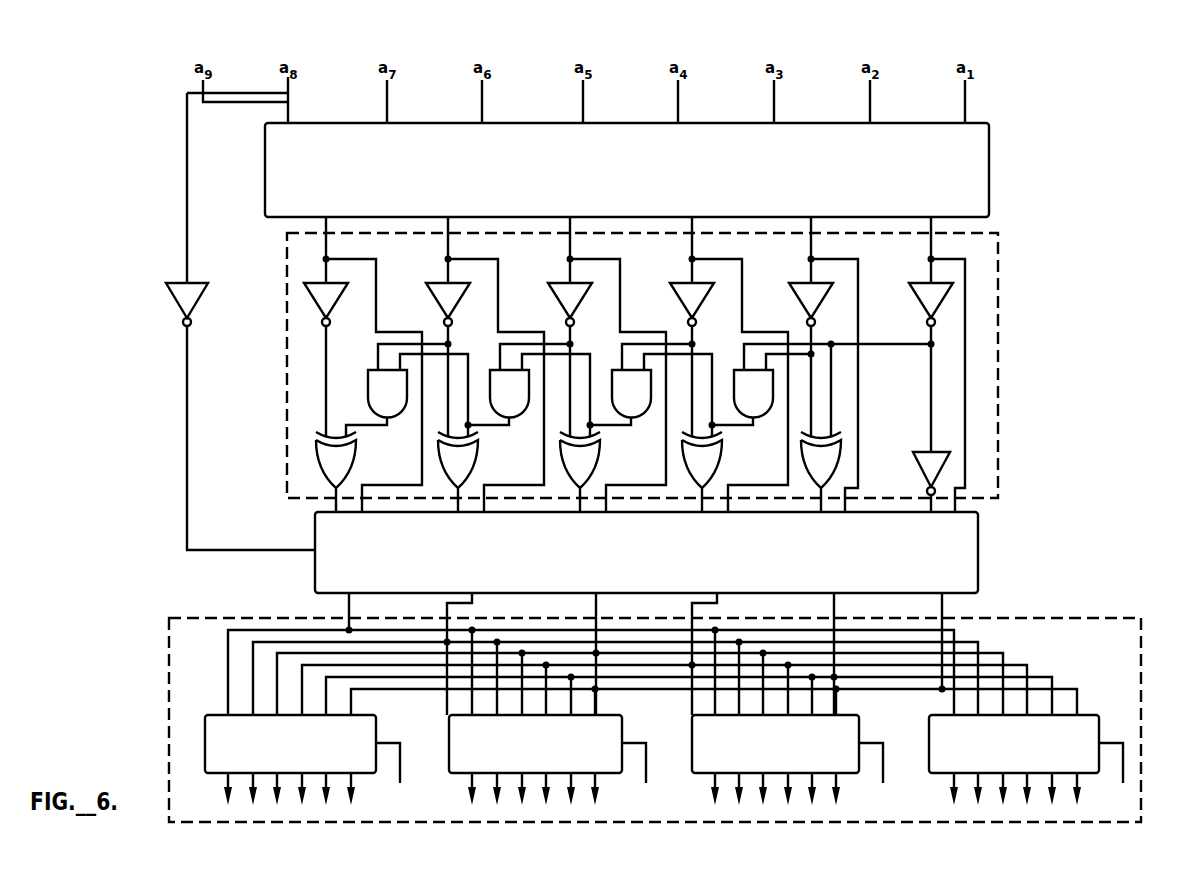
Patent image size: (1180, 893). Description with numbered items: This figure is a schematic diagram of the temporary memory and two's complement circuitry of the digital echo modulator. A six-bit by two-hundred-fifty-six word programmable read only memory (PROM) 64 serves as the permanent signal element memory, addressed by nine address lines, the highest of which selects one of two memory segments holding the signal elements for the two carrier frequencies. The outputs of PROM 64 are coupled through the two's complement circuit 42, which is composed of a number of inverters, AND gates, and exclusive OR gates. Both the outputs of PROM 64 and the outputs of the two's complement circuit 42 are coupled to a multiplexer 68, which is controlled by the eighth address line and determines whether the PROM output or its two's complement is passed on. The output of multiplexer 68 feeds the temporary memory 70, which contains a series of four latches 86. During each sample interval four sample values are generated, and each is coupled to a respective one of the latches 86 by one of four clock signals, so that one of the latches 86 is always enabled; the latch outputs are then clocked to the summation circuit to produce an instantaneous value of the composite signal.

The permanent signal element memory 64 is at (989, 152).
The logic conversion circuit 42 is at (998, 266).
The multiplexer 68 is at (978, 553).
The temporary memory 70 is at (1118, 618).
The latches 86 is at (1107, 703).